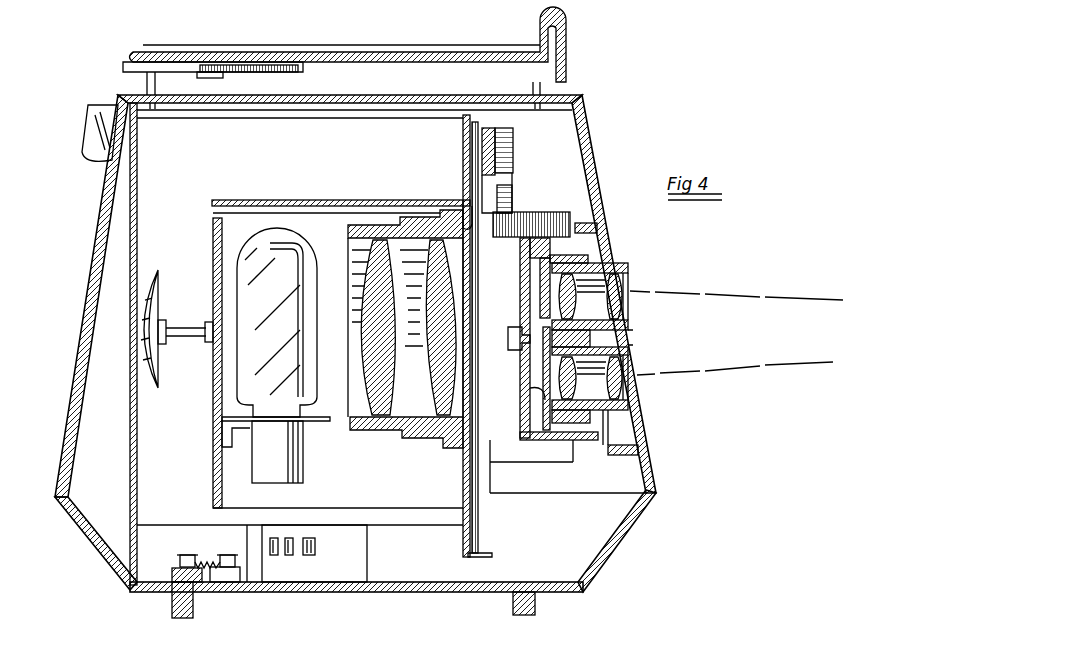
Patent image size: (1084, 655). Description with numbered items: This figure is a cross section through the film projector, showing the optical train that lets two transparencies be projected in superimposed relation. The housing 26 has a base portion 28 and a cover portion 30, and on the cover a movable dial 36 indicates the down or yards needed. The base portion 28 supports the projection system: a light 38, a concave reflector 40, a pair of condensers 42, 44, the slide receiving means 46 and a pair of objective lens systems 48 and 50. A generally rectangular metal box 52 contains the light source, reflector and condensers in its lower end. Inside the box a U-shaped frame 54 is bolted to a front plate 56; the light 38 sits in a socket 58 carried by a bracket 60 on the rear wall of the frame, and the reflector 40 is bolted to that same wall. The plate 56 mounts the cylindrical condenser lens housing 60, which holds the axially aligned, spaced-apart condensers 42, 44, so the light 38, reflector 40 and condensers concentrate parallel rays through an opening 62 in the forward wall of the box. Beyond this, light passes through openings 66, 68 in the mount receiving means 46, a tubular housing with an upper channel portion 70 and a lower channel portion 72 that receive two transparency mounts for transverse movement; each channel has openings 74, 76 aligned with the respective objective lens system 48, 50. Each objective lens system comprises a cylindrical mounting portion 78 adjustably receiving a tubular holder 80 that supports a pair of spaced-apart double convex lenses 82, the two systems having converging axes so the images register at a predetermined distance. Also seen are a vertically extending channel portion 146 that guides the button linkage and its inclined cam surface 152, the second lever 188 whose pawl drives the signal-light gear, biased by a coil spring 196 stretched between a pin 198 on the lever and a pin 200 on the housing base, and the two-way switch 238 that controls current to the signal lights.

The housing 26 is at (598, 116).
The base portion 28 is at (636, 522).
The cover portion 30 is at (652, 459).
The movable dial 36 is at (123, 66).
The light 38 is at (238, 253).
The reflector 40 is at (160, 300).
The condenser 42 is at (376, 410).
The condenser 44 is at (440, 370).
The slide receiving means 46 is at (530, 222).
The objective lens system 48 is at (624, 266).
The objective lens system 50 is at (636, 406).
The metal box 52 is at (241, 159).
The U-shaped frame 54 is at (212, 457).
The front plate 56 is at (463, 483).
The socket 58 is at (272, 474).
The bracket 60 is at (408, 200).
The opening 62 is at (460, 215).
The opening 66 is at (522, 283).
The opening 68 is at (524, 357).
The upper channel portion 70 is at (541, 256).
The lower channel portion 72 is at (540, 442).
The opening 74 is at (540, 333).
The opening 76 is at (530, 388).
The cylindrical mounting portion 78 is at (586, 262).
The tubular holder 80 is at (633, 340).
The double convex lens 82 is at (600, 292).
The vertically extending channel portion 146 is at (487, 547).
The inclined cam surface 152 is at (510, 152).
The second lever 188 is at (172, 582).
The coil spring 196 is at (204, 556).
The pin 198 is at (186, 553).
The pin 200 is at (228, 553).
The two-way switch 238 is at (296, 568).